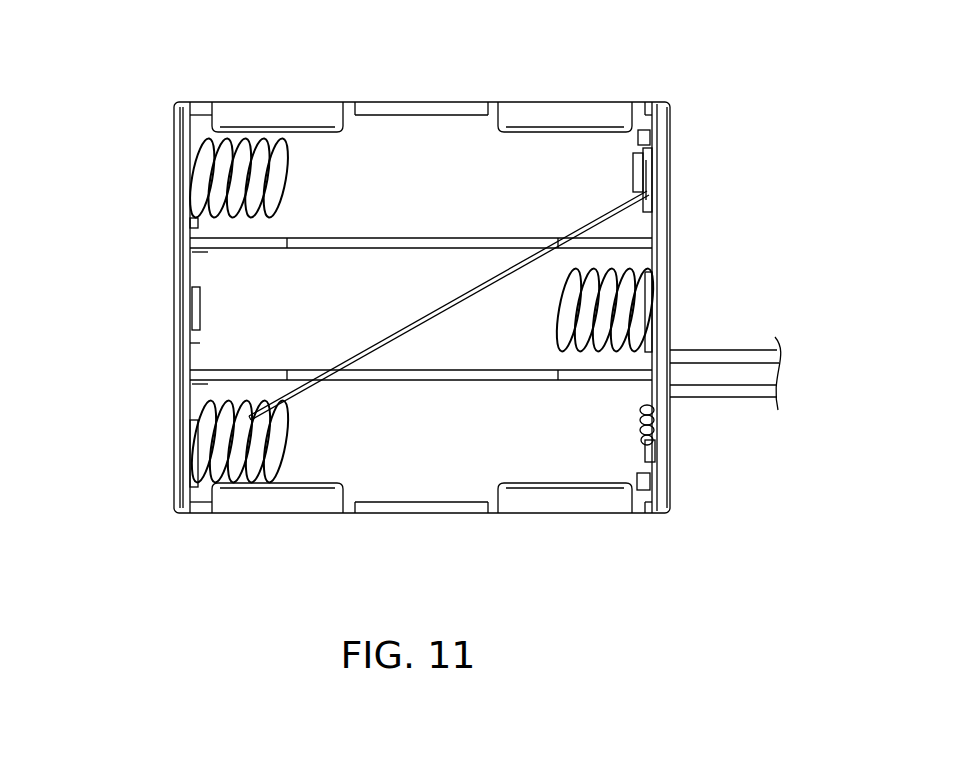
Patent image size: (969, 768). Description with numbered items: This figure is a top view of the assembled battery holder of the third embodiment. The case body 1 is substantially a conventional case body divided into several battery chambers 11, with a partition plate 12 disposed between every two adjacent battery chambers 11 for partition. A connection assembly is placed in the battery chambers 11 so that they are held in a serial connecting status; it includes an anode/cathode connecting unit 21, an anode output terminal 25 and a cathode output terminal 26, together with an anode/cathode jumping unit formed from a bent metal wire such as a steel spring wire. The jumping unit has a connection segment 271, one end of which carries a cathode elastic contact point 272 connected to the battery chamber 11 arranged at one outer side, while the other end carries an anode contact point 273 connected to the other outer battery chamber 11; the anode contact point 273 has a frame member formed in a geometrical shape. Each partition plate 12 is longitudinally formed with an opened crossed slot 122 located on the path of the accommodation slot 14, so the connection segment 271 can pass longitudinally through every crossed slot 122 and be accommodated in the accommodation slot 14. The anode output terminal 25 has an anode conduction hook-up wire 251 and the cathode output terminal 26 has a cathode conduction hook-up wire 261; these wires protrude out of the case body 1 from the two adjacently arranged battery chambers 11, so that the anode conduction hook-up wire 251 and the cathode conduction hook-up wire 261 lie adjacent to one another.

The case body 1 is at (610, 103).
The battery chamber 11 is at (387, 205).
The partition plate 12 is at (452, 372).
The accommodation slot 14 is at (297, 380).
The crossed slot 122 is at (313, 370).
The anode/cathode connecting unit 21 is at (197, 170).
The anode output terminal 25 is at (653, 440).
The anode conduction hook-up wire 251 is at (717, 395).
The cathode output terminal 26 is at (648, 286).
The cathode conduction hook-up wire 261 is at (725, 357).
The connection segment 271 is at (603, 218).
The cathode elastic contact point 272 is at (200, 420).
The anode contact point 273 is at (650, 172).